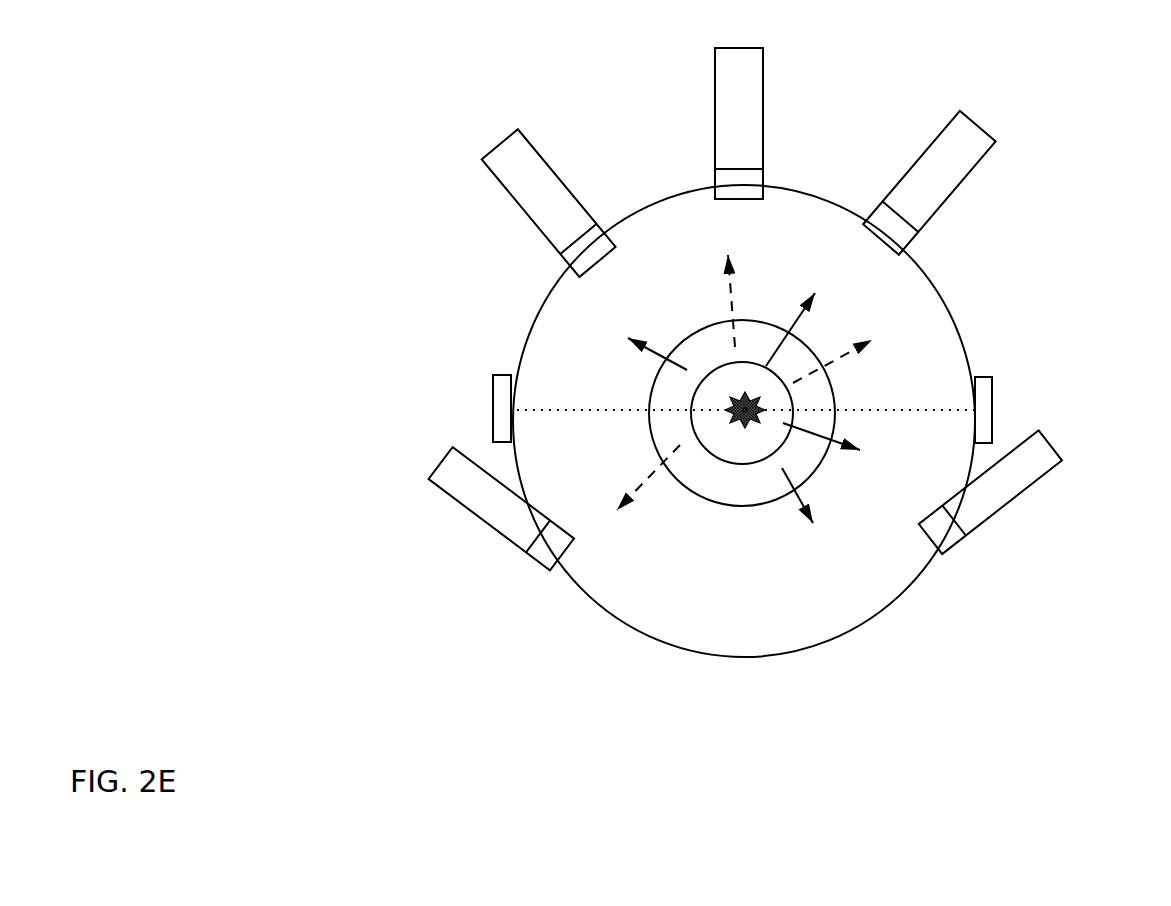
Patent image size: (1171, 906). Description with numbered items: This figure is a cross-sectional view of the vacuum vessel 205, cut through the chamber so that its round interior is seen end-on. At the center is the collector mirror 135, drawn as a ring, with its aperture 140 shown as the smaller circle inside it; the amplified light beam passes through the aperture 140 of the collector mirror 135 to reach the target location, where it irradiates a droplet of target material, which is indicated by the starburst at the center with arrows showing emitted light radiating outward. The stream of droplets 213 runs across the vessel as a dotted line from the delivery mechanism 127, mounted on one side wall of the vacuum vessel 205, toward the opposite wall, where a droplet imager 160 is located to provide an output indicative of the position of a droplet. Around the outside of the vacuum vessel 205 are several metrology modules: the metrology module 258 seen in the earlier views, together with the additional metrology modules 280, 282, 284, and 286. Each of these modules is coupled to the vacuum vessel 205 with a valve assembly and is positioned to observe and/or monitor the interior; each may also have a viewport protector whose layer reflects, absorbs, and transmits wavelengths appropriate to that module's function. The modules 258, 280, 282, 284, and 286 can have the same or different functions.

The vacuum vessel 205 is at (967, 312).
The stream of droplets 213 is at (590, 410).
The collector mirror 135 is at (755, 507).
The aperture 140 is at (732, 464).
The metrology module 284 is at (725, 65).
The metrology module 282 is at (503, 147).
The metrology module 286 is at (973, 137).
The metrology module 280 is at (448, 662).
The metrology module 258 is at (1042, 630).
The delivery mechanism 127 is at (493, 410).
The droplet imager 160 is at (997, 416).